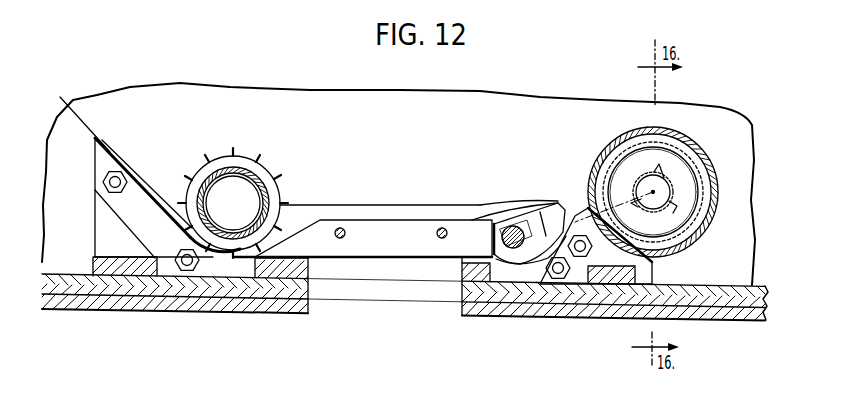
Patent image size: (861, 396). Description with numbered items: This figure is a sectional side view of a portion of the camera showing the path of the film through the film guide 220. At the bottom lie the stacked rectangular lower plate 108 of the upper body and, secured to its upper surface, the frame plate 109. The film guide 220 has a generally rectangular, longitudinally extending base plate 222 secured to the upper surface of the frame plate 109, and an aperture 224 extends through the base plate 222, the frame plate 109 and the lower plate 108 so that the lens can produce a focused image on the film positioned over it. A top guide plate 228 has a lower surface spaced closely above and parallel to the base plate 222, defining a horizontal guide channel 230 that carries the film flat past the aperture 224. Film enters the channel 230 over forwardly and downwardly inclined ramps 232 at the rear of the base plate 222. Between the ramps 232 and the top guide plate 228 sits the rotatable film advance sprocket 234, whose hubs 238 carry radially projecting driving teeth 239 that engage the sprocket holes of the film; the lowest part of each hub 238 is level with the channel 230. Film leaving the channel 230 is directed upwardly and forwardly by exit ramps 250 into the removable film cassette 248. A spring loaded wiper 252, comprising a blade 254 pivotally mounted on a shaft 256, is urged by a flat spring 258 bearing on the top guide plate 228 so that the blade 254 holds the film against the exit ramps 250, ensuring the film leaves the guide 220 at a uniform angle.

The lower plate 108 is at (733, 317).
The frame plate 109 is at (698, 288).
The film guide 220 is at (402, 206).
The base plate 222 is at (475, 272).
The aperture 224 is at (312, 289).
The top guide plate 228 is at (368, 228).
The guide channel 230 is at (402, 255).
The ramps 232 is at (137, 217).
The film advance sprocket 234 is at (239, 165).
The hubs 238 is at (200, 176).
The driving teeth 239 is at (276, 178).
The film cassette 248 is at (697, 160).
The exit ramps 250 is at (543, 268).
The spring loaded wiper 252 is at (538, 208).
The blade 254 is at (565, 212).
The shaft 256 is at (511, 228).
The flat spring 258 is at (482, 215).